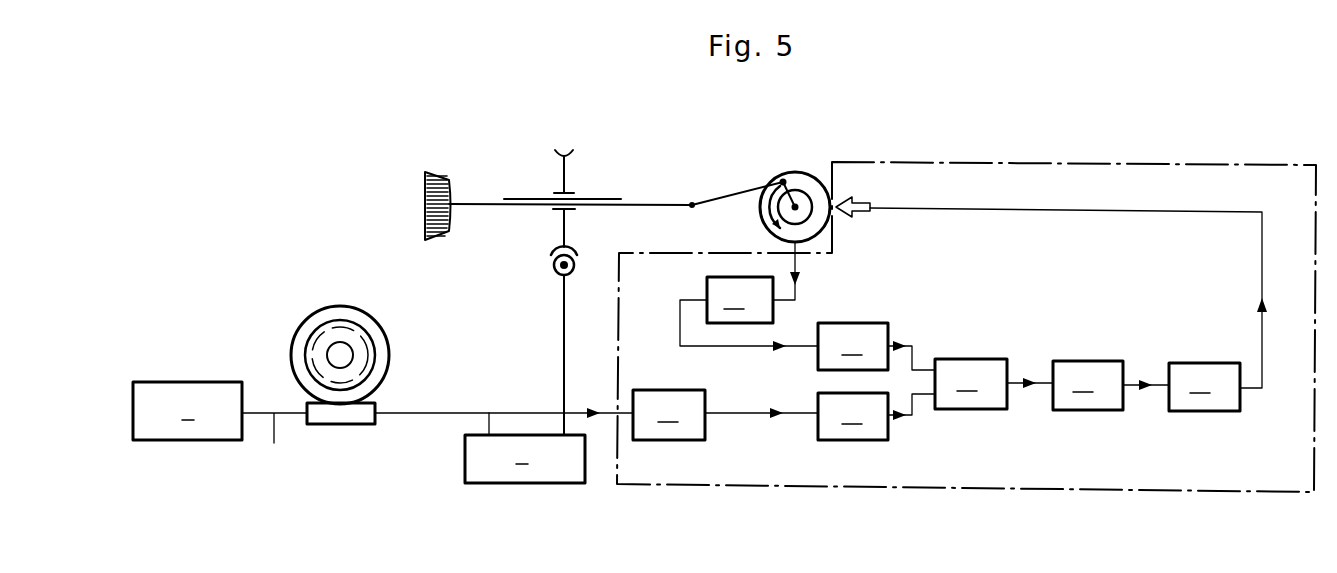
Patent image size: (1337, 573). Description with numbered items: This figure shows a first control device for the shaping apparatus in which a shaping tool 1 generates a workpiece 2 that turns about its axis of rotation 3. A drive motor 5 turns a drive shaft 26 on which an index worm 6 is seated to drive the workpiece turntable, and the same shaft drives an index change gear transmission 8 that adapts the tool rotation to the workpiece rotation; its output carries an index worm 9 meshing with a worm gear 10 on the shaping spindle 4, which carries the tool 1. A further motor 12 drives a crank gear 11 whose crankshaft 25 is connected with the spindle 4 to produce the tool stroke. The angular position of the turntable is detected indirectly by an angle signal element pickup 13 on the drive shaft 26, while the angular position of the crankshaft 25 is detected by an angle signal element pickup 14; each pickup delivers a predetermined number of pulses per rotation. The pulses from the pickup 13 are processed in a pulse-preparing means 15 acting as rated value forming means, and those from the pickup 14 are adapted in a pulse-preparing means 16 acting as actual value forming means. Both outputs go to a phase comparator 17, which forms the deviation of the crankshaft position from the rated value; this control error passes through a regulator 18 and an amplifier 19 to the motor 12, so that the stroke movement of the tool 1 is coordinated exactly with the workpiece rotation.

The shaping tool 1 is at (436, 195).
The workpiece 2 is at (322, 335).
The axis of rotation 3 is at (372, 327).
The shaping spindle 4 is at (660, 202).
The drive motor 5 is at (187, 411).
The index worm 6 is at (360, 425).
The index change gear transmission 8 is at (525, 459).
The index worm 9 is at (555, 268).
The worm gear 10 is at (565, 172).
The crank gear 11 is at (804, 194).
The motor 12 is at (818, 184).
The angle signal element pickup 13 is at (669, 415).
The angle signal element pickup 14 is at (740, 300).
The pulse-preparing means 15 is at (853, 416).
The pulse-preparing means 16 is at (853, 346).
The phase comparator 17 is at (971, 384).
The regulator 18 is at (1088, 385).
The amplifier 19 is at (1204, 387).
The crankshaft 25 is at (799, 209).
The drive shaft 26 is at (274, 442).